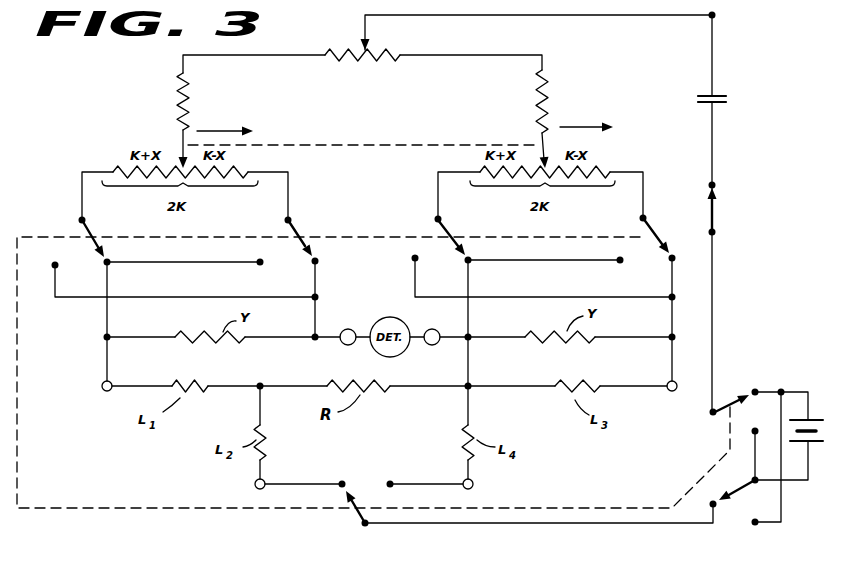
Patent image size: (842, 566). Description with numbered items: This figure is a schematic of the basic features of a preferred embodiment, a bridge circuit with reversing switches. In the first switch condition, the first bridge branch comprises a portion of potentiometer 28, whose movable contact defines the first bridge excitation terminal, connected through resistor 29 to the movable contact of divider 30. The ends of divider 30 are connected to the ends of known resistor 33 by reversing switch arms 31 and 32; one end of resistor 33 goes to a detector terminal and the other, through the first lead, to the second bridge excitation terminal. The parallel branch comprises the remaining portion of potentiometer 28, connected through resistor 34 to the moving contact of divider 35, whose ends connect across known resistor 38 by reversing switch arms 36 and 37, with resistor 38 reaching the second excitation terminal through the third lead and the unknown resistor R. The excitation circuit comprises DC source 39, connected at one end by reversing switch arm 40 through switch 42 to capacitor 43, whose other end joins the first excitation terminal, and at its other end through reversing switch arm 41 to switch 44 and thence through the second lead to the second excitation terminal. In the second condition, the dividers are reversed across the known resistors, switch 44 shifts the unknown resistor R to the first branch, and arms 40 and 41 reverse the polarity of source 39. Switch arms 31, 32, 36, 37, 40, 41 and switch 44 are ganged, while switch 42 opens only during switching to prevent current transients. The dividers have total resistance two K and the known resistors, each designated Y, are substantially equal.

The potentiometer 28 is at (378, 62).
The resistor 29 is at (196, 106).
The divider 30 is at (258, 172).
The reversing switch arm 31 is at (86, 232).
The reversing switch arm 32 is at (298, 230).
The known resistor 33 is at (190, 345).
The resistor 34 is at (553, 101).
The divider 35 is at (607, 172).
The reversing switch arm 36 is at (446, 234).
The reversing switch arm 37 is at (656, 236).
The known resistor 38 is at (570, 346).
The DC excitation source 39 is at (805, 446).
The reversing switch arm 40 is at (727, 401).
The reversing switch arm 41 is at (735, 503).
The switch 42 is at (716, 226).
The capacitor 43 is at (722, 96).
The switch 44 is at (358, 501).